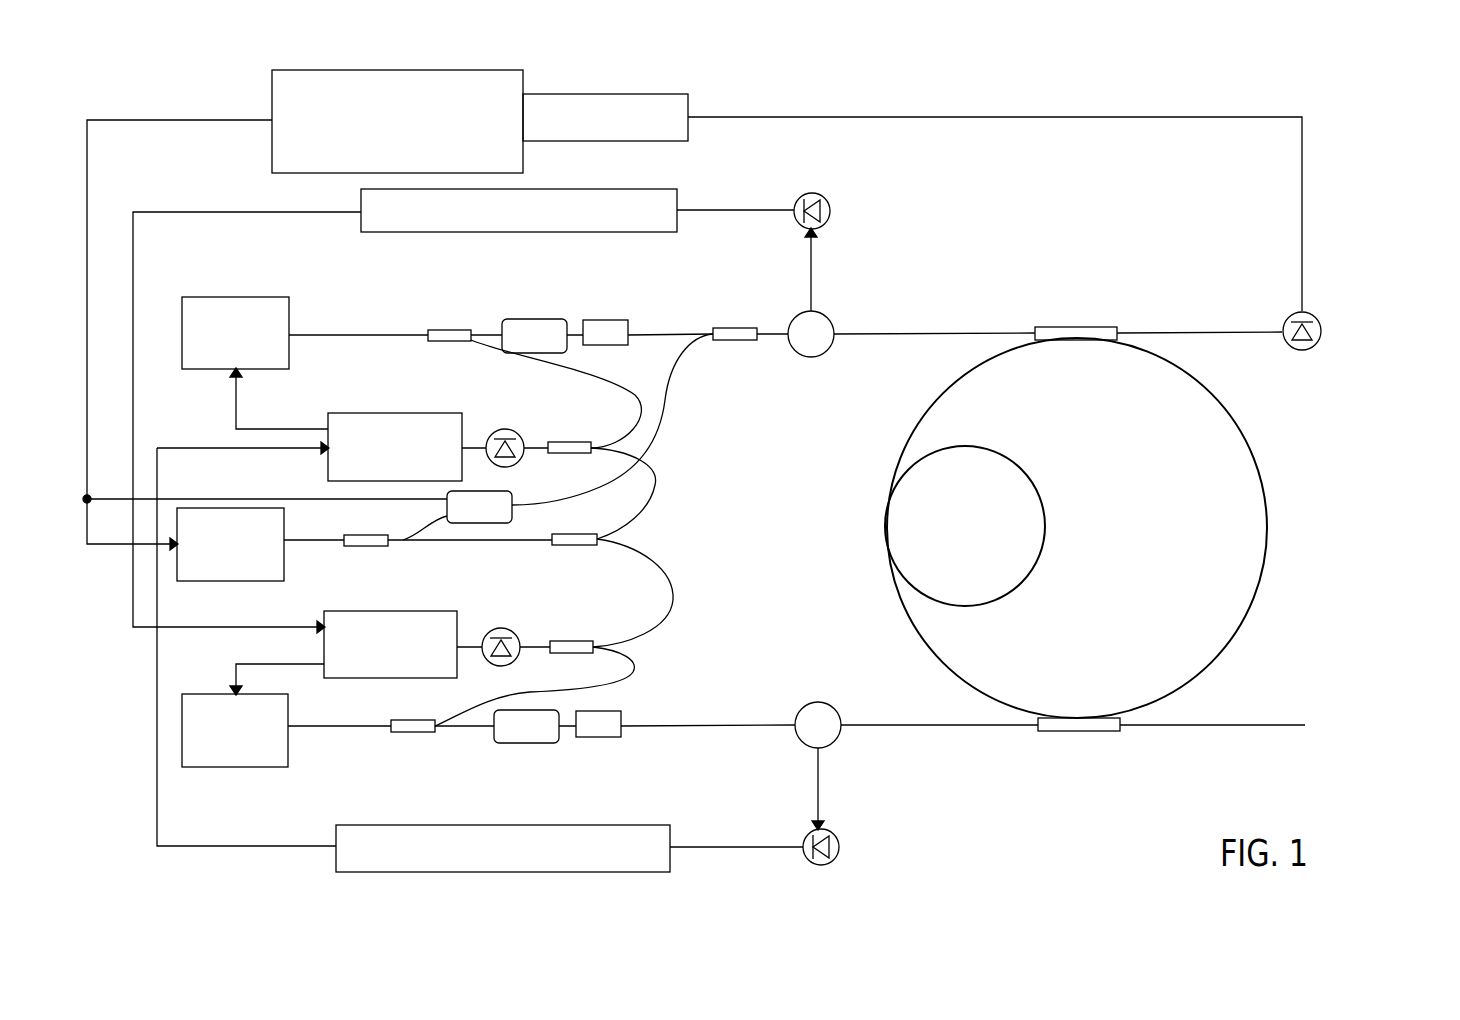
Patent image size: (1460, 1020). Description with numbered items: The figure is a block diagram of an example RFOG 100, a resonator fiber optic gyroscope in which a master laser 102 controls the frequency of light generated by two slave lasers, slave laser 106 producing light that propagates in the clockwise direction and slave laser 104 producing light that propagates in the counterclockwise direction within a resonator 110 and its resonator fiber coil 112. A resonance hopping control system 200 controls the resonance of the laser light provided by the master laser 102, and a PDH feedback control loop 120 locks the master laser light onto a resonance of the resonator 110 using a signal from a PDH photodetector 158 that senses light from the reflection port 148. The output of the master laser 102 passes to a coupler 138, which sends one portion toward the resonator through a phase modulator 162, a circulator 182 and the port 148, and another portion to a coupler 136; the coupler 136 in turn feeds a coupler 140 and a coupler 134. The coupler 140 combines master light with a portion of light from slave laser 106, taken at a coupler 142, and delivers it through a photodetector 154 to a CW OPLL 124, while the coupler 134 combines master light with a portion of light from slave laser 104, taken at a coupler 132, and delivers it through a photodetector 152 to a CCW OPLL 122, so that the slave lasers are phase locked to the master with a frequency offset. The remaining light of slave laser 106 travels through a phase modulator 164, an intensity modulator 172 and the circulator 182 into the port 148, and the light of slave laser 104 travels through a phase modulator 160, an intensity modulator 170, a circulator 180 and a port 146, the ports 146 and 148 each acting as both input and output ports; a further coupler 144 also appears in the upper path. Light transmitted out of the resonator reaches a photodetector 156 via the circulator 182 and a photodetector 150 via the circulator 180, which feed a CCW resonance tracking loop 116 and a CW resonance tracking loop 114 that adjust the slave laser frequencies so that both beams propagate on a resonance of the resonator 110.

The RFOG 100 is at (1360, 188).
The resonance hopping control system 200 is at (453, 100).
The PDH feedback control loop 120 is at (670, 115).
The CCW resonance tracking loop 116 is at (560, 192).
The CW resonance tracking loop 114 is at (655, 856).
The slave laser 106 is at (282, 310).
The slave laser 104 is at (277, 758).
The master laser 102 is at (272, 560).
The CW OPLL 124 is at (405, 415).
The CCW OPLL 122 is at (410, 612).
The phase modulator 164 is at (525, 318).
The phase modulator 160 is at (530, 745).
The phase modulator 162 is at (503, 497).
The intensity modulator 172 is at (600, 320).
The intensity modulator 170 is at (596, 737).
The coupler 142 is at (442, 332).
The optical coupler 144 is at (740, 330).
The coupler 140 is at (565, 446).
The coupler 138 is at (365, 540).
The coupler 136 is at (575, 541).
The coupler 134 is at (570, 645).
The coupler 132 is at (410, 732).
The port 148 is at (1078, 325).
The port 146 is at (1080, 731).
The photodetector 154 is at (502, 430).
The photodetector 152 is at (485, 660).
The PDH photodetector 158 is at (1297, 348).
The photodetector 156 is at (828, 200).
The photodetector 150 is at (837, 860).
The circulator 182 is at (811, 357).
The circulator 180 is at (805, 705).
The resonator 110 is at (1268, 644).
The resonator fiber coil 112 is at (1025, 478).